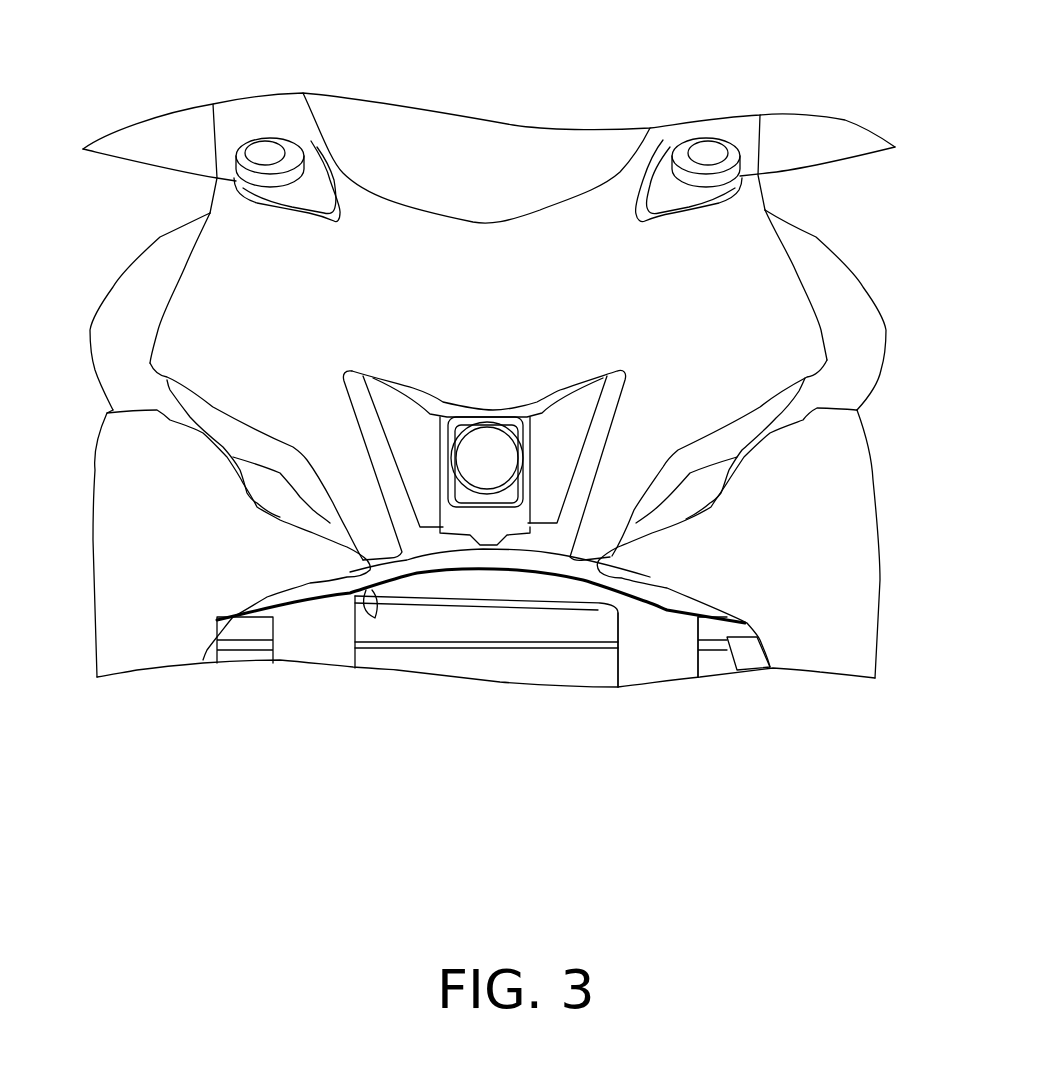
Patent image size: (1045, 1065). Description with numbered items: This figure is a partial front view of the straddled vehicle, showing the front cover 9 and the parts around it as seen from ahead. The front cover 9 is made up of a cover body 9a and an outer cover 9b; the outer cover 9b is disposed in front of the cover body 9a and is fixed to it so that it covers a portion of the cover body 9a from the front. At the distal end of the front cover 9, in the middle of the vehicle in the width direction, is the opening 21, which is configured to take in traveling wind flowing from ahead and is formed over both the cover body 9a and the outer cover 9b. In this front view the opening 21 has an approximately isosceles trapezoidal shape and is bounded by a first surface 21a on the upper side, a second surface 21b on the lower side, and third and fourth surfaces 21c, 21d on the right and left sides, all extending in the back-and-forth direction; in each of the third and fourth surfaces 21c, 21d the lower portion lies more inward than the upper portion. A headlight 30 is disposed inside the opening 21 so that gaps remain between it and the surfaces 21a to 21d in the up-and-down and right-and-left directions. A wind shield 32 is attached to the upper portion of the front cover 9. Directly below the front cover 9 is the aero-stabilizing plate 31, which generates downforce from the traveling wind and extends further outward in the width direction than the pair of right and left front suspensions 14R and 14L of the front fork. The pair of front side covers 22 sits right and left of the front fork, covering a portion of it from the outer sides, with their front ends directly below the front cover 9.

The front cover 9 is at (465, 292).
The cover body 9a is at (140, 323).
The outer cover 9b is at (227, 288).
The right front suspension 14R is at (313, 647).
The left front suspension 14L is at (660, 667).
The opening 21 is at (624, 404).
The first surface 21a is at (398, 428).
The second surface 21b is at (487, 656).
The third surface 21c is at (580, 497).
The fourth surface 21d is at (397, 495).
The front side cover 22 is at (137, 647).
The headlight 30 is at (493, 436).
The aero-stabilizing plate 31 is at (447, 560).
The wind shield 32 is at (401, 137).